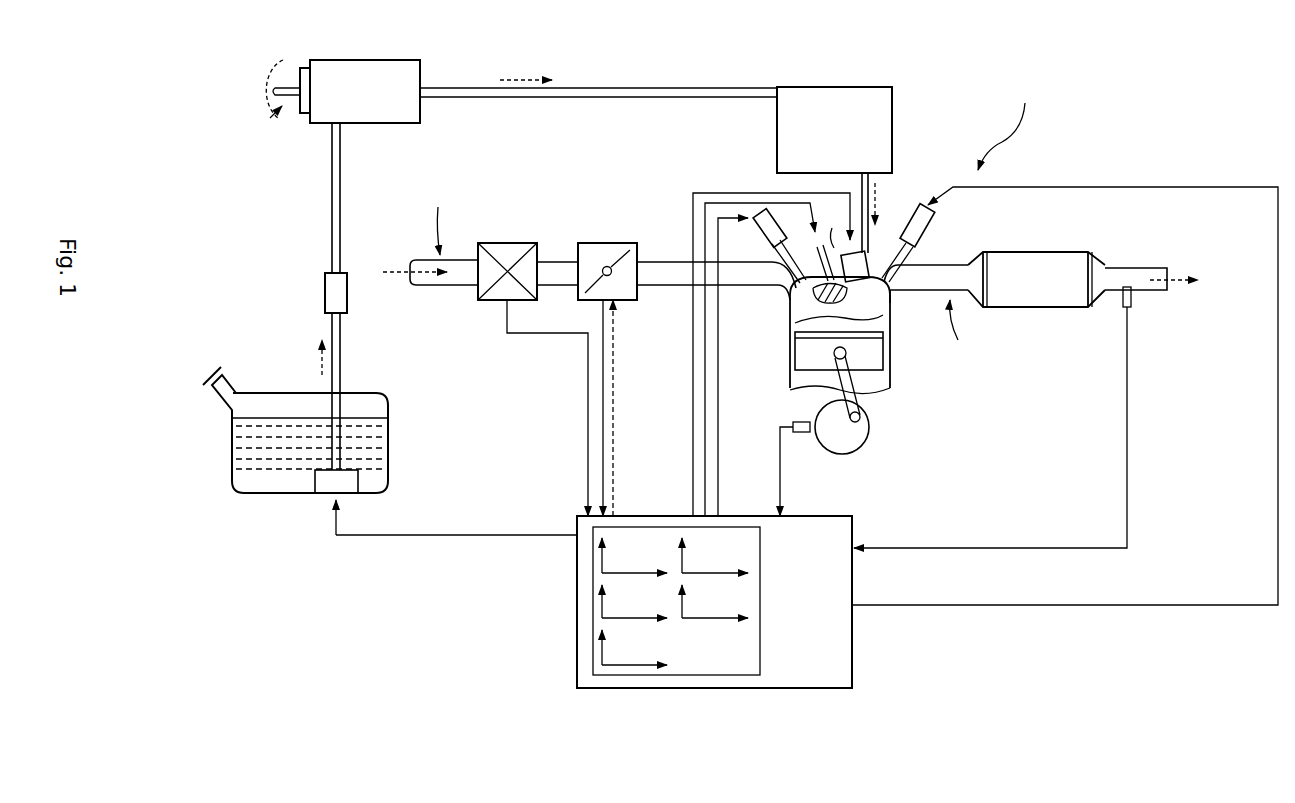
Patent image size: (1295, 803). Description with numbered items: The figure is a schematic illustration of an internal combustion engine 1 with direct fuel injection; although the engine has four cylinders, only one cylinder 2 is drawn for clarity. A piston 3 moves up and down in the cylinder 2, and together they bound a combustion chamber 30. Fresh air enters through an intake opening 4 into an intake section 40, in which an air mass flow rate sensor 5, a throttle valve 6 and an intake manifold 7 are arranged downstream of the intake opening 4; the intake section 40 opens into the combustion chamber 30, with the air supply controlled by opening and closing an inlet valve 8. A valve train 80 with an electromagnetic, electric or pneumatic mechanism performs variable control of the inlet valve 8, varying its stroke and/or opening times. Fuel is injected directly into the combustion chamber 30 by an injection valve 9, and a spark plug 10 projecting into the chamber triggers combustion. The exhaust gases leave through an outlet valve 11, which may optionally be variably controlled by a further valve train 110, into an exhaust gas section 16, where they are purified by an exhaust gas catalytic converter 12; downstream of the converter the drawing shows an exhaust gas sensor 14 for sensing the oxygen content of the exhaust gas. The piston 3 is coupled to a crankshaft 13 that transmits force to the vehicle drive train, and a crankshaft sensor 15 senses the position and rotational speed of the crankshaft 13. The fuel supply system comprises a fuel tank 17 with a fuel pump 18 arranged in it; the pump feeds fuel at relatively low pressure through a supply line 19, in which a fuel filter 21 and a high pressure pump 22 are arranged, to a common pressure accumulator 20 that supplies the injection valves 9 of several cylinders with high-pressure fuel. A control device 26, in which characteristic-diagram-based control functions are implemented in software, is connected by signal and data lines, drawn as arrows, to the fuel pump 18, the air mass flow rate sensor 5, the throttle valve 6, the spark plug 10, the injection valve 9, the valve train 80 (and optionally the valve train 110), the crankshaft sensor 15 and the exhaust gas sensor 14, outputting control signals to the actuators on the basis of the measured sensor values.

The internal combustion engine 1 is at (1004, 123).
The cylinder 2 is at (890, 377).
The piston 3 is at (883, 350).
The intake opening 4 is at (412, 270).
The air mass flow rate sensor 5 is at (507, 243).
The throttle valve 6 is at (607, 243).
The intake manifold 7 is at (657, 262).
The inlet valve 8 is at (768, 248).
The valve train 80 is at (795, 218).
The injection valve 9 is at (868, 253).
The spark plug 10 is at (774, 359).
The outlet valve 11 is at (900, 256).
The valve train 110 is at (931, 243).
The exhaust gas catalytic converter 12 is at (1041, 252).
The crankshaft 13 is at (865, 450).
The exhaust gas sensor 14 is at (1133, 302).
The crankshaft sensor 15 is at (803, 433).
The exhaust gas section 16 is at (961, 337).
The fuel tank 17 is at (264, 496).
The fuel pump 18 is at (323, 496).
The supply line 19 is at (608, 88).
The pressure accumulator 20 is at (840, 87).
The fuel filter 21 is at (325, 294).
The high pressure pump 22 is at (379, 60).
The control device 26 is at (852, 650).
The combustion chamber 30 is at (796, 314).
The intake section 40 is at (439, 217).